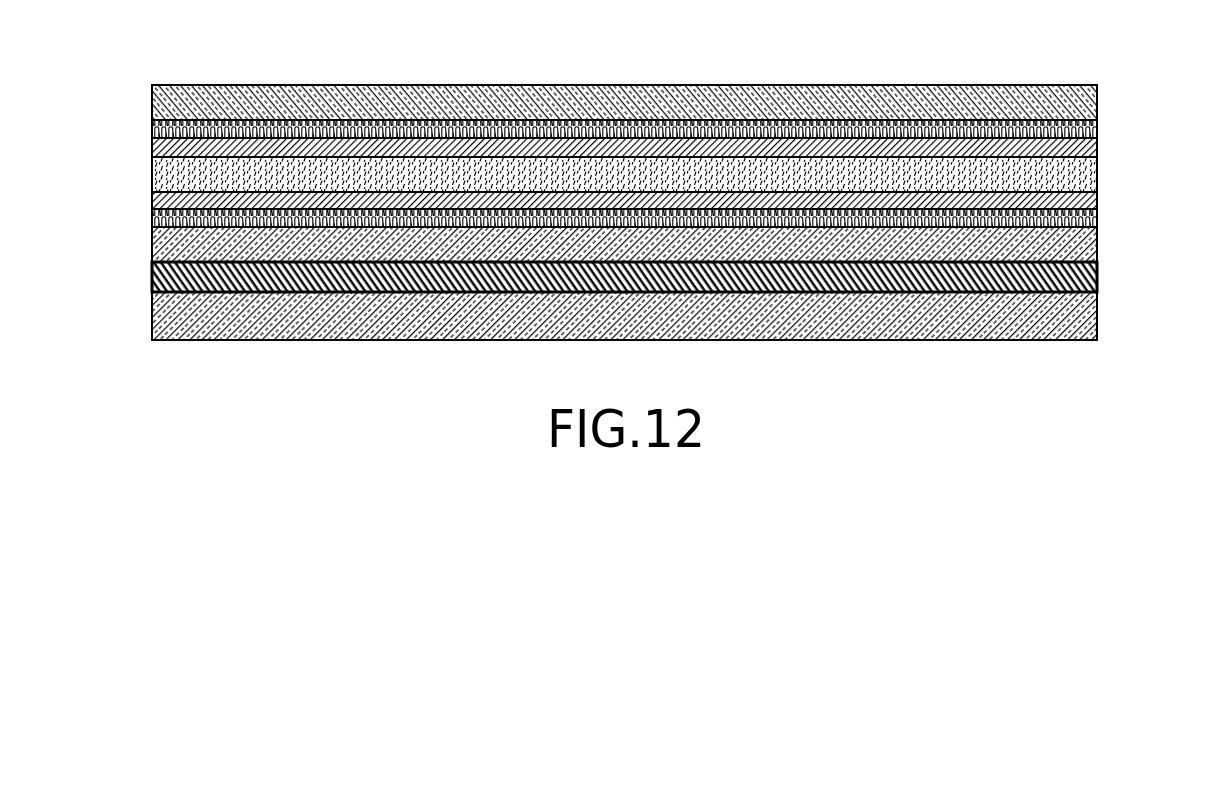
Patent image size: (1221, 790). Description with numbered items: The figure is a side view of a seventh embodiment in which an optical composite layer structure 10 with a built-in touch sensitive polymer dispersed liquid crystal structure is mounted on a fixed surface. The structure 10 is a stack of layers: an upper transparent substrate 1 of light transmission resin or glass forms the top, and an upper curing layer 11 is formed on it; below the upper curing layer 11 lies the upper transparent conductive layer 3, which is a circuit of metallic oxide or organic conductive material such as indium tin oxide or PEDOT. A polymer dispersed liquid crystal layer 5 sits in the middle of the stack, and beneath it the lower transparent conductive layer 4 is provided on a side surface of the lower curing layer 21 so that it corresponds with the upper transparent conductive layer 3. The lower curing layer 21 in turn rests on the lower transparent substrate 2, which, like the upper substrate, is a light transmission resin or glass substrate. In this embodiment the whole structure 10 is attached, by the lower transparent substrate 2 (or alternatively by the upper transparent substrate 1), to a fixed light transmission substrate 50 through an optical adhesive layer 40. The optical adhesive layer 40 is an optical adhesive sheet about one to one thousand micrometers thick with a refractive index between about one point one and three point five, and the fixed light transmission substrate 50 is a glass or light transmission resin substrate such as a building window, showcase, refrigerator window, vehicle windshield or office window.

The optical composite layer structure 10 is at (637, 41).
The upper transparent substrate 1 is at (1087, 102).
The upper curing layer 11 is at (1087, 132).
The upper transparent conductive layer 3 is at (1087, 145).
The polymer dispersed liquid crystal layer 5 is at (160, 172).
The lower transparent conductive layer 4 is at (1083, 202).
The lower curing layer 21 is at (1087, 217).
The lower transparent substrate 2 is at (1087, 247).
The optical adhesive layer 40 is at (160, 277).
The fixed light transmission substrate 50 is at (160, 315).